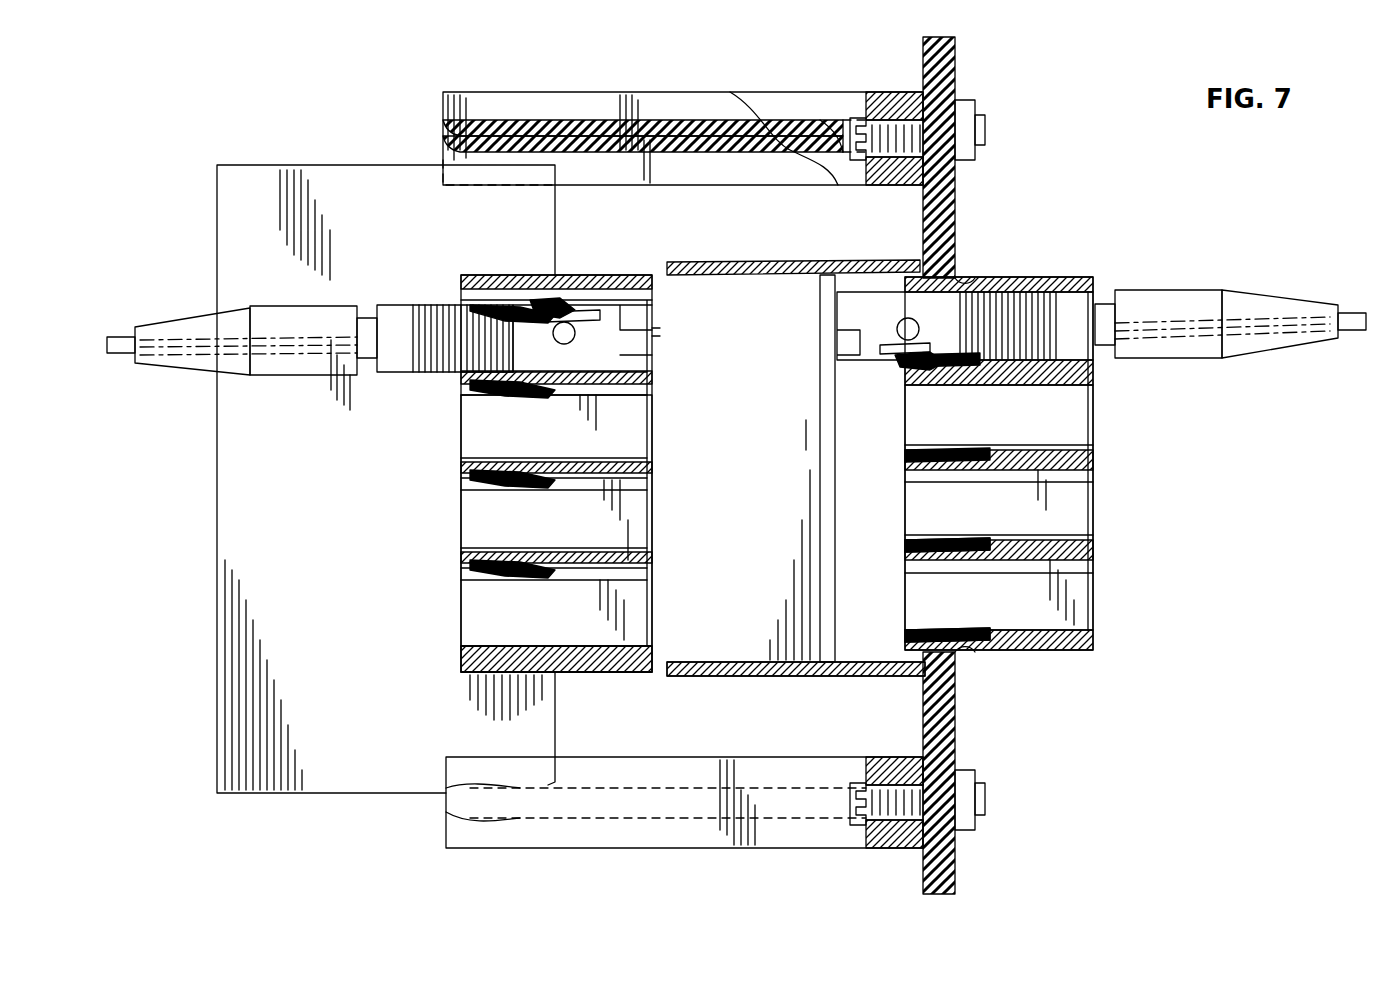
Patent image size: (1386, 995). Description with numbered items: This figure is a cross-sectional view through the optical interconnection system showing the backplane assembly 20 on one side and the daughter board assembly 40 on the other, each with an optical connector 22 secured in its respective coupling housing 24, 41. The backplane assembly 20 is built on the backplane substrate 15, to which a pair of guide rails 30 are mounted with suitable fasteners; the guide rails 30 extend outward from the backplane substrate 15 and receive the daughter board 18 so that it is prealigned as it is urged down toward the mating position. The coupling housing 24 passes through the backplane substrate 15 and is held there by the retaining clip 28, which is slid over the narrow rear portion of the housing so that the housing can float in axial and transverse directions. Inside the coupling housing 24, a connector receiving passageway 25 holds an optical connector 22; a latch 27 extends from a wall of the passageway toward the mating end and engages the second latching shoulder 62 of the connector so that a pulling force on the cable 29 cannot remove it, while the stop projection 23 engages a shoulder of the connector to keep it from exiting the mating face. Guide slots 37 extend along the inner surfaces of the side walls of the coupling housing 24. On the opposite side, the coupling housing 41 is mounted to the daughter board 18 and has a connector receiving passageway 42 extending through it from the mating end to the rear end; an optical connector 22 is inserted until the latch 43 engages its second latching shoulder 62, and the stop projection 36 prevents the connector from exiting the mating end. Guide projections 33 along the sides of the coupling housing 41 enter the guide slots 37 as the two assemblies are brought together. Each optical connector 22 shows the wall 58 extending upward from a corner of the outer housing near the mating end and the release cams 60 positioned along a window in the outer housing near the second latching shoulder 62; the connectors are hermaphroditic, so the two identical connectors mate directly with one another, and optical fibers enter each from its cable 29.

The backplane substrate 15 is at (960, 88).
The daughter board 18 is at (275, 165).
The backplane assembly 20 is at (958, 70).
The optical connector 22 is at (393, 300).
The stop projection 23 is at (975, 482).
The coupling housing 24 is at (1032, 277).
The connector receiving passageway 25 is at (1093, 600).
The latch 27 is at (920, 600).
The retaining clip 28 is at (968, 262).
The cable 29 is at (118, 330).
The guide rail 30 is at (595, 92).
The guide projection 33 is at (580, 672).
The stop projection 36 is at (462, 460).
The guide slot 37 is at (775, 662).
The daughter board assembly 40 is at (213, 160).
The coupling housing 41 is at (462, 660).
The connector receiving passageway 42 is at (462, 610).
The latch 43 is at (548, 580).
The wall 58 is at (832, 262).
The cam 60 is at (572, 312).
The second latching shoulder 62 is at (556, 300).